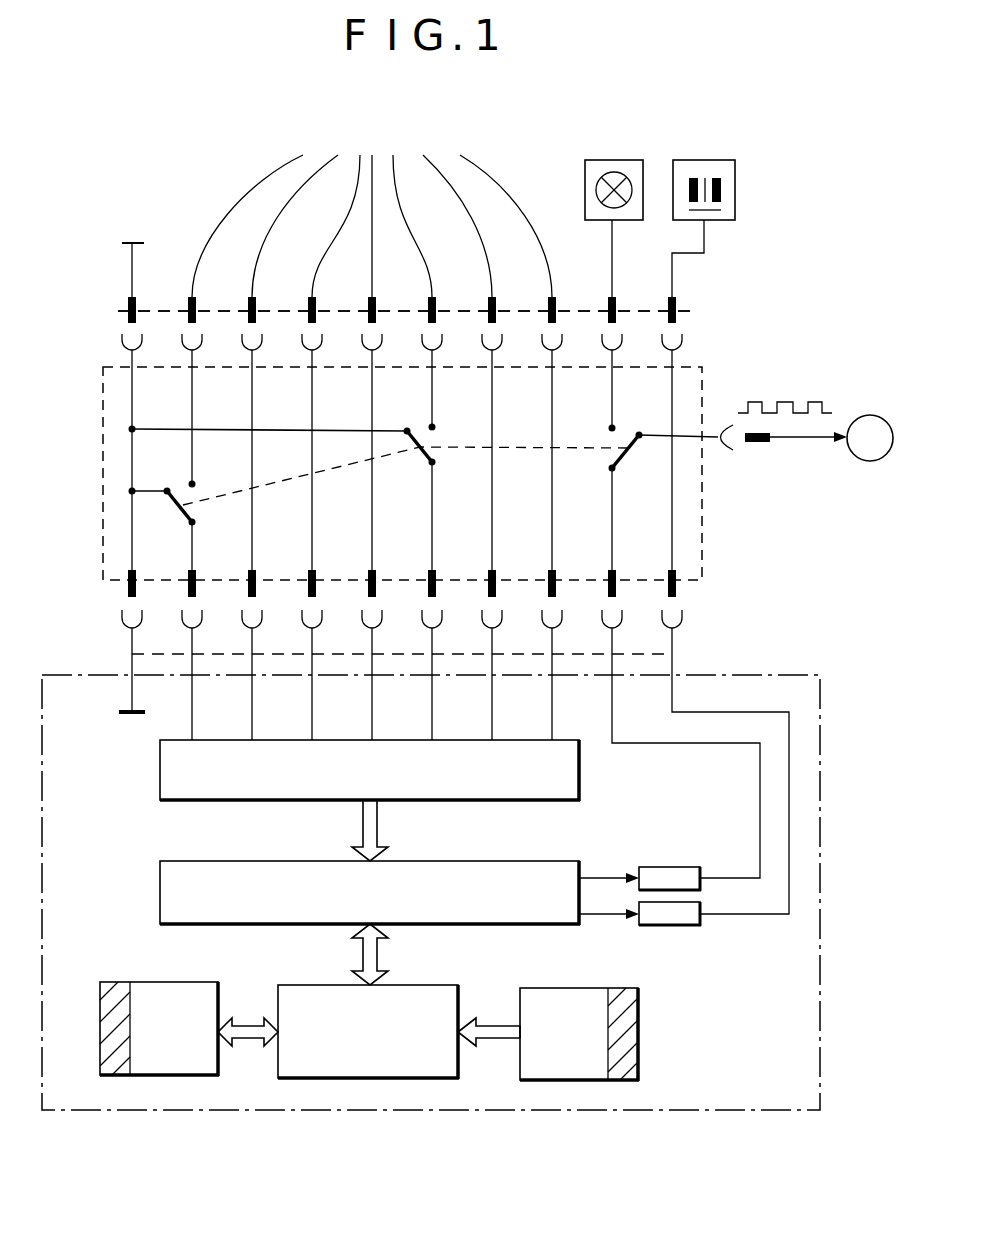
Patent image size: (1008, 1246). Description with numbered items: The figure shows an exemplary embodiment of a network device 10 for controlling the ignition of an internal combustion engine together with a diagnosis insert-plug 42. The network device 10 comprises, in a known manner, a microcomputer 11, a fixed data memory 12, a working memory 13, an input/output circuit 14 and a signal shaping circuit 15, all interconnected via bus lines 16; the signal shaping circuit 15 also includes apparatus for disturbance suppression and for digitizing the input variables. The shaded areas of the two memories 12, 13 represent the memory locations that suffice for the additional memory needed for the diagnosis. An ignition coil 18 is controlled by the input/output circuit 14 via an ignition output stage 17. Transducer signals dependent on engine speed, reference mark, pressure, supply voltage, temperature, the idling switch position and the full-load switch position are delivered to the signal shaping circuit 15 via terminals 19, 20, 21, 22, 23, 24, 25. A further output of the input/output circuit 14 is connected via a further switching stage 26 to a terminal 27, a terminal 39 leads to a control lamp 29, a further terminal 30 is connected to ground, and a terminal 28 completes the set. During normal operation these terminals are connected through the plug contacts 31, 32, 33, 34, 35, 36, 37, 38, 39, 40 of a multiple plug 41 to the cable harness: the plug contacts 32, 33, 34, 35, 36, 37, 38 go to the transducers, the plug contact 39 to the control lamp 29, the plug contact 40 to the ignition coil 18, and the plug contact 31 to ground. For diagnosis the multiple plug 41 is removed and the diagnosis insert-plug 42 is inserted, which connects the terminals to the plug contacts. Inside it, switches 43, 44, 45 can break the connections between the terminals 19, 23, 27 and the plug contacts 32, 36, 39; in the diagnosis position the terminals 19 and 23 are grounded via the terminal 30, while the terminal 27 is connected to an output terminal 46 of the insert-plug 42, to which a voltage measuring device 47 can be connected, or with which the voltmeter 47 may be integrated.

The network device 10 is at (822, 908).
The microcomputer 11 is at (320, 985).
The fixed data memory 12 is at (586, 988).
The working memory 13 is at (172, 982).
The input/output circuit 14 is at (160, 880).
The signal shaping circuit 15 is at (160, 762).
The bus lines 16 is at (377, 820).
The ignition output stage 17 is at (656, 926).
The ignition coil 18 is at (740, 135).
The terminal 19 is at (184, 622).
The terminal 20 is at (244, 622).
The terminal 21 is at (304, 622).
The terminal 22 is at (364, 622).
The terminal 23 is at (424, 622).
The terminal 24 is at (484, 622).
The terminal 25 is at (544, 622).
The further switching stage 26 is at (674, 867).
The terminal 27 is at (604, 622).
The terminal 28 is at (664, 622).
The control lamp 29 is at (634, 160).
The terminal 30 is at (122, 622).
The plug contact 31 is at (128, 302).
The plug contact 32 is at (188, 302).
The plug contact 33 is at (248, 302).
The plug contact 34 is at (308, 302).
The plug contact 35 is at (368, 302).
The plug contact 36 is at (428, 302).
The plug contact 37 is at (488, 302).
The plug contact 38 is at (548, 302).
The plug contact 39 is at (608, 302).
The plug contact 40 is at (668, 302).
The multiple plug 41 is at (700, 313).
The diagnosis insert-plug 42 is at (703, 510).
The switch 43 is at (190, 518).
The switch 44 is at (428, 460).
The switch 45 is at (630, 458).
The output terminal 46 is at (733, 450).
The voltage measuring device 47 is at (861, 458).